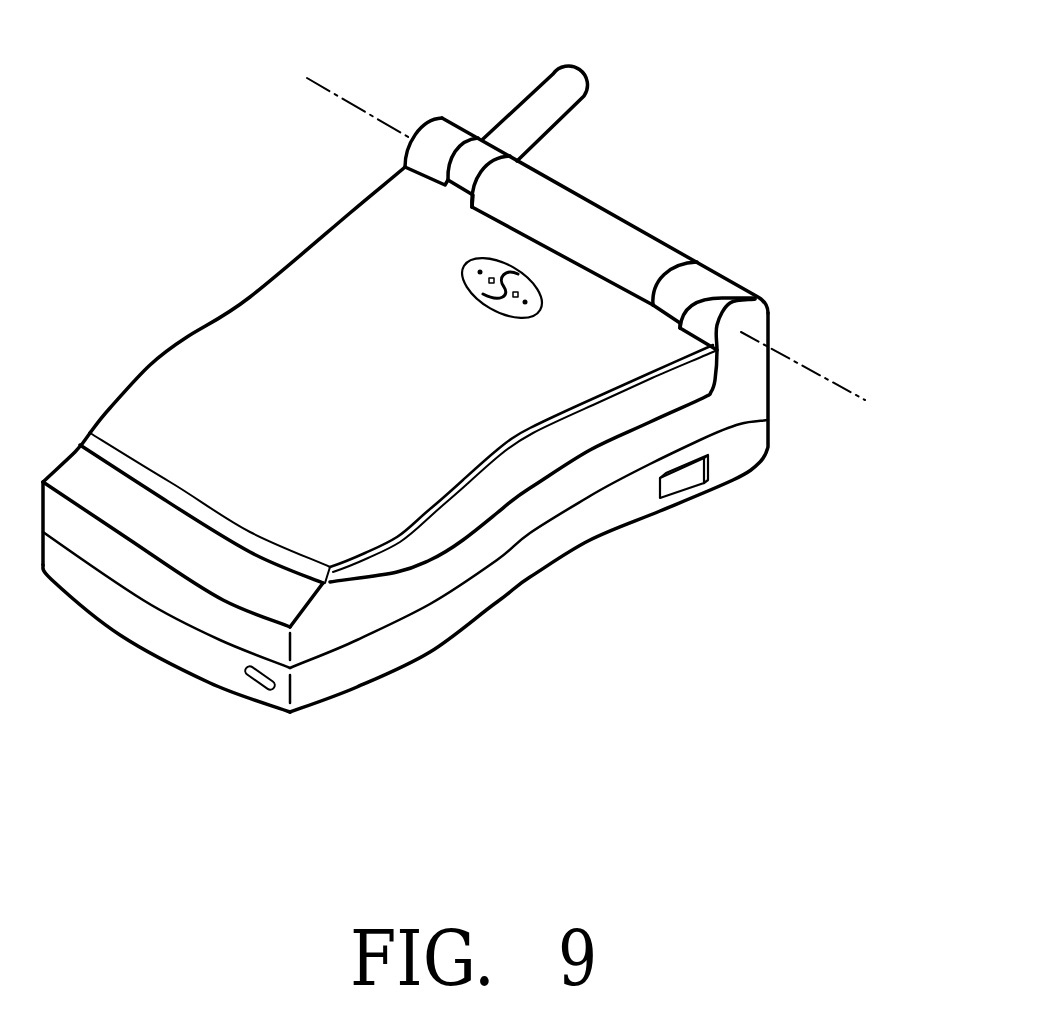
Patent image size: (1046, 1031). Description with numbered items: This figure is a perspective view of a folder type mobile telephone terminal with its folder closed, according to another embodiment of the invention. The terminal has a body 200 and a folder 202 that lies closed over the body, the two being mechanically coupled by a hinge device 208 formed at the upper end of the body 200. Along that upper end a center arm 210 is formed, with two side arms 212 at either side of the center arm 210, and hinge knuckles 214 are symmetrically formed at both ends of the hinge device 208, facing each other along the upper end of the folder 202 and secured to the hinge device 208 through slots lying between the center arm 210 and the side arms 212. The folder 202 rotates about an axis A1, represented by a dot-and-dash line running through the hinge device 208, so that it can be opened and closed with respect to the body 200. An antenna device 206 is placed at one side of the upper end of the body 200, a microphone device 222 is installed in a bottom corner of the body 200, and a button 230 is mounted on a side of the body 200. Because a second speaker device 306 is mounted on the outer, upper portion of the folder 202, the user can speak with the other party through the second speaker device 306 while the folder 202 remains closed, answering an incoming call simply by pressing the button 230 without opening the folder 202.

The body 200 is at (432, 638).
The folder 202 is at (284, 336).
The antenna device 206 is at (558, 88).
The hinge device 208 is at (768, 288).
The center arm 210 is at (643, 252).
The side arms 212 is at (445, 140).
The hinge knuckles 214 is at (487, 156).
The microphone device 222 is at (253, 677).
The button 230 is at (684, 481).
The second speaker device 306 is at (472, 255).
The axis A1 is at (334, 90).